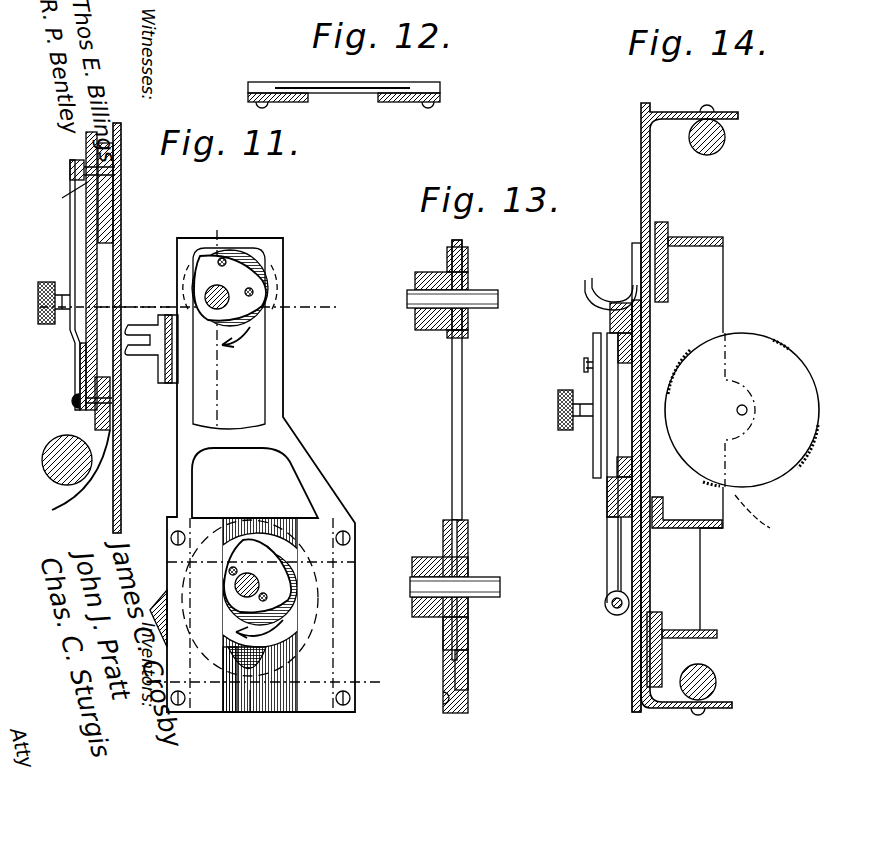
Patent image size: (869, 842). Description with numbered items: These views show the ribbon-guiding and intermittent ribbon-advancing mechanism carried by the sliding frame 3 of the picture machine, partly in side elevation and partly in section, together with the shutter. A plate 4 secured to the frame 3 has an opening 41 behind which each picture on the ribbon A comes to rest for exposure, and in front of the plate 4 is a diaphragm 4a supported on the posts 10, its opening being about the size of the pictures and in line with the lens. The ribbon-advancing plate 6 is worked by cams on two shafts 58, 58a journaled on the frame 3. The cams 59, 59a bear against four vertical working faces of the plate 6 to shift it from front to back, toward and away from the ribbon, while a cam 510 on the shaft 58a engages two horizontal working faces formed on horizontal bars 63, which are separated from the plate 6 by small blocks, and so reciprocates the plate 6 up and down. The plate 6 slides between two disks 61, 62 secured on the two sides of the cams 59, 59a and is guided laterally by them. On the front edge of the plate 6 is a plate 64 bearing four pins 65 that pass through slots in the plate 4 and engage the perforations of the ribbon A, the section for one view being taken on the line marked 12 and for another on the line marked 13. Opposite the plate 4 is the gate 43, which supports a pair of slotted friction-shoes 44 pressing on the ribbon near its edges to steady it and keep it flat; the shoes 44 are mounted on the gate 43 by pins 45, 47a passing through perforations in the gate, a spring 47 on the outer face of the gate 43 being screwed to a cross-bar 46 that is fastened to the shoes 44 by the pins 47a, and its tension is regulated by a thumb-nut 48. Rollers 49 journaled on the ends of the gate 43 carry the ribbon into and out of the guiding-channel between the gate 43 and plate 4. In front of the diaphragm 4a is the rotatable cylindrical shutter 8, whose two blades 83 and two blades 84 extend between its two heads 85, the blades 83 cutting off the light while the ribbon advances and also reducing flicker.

In FIG. 14, the sliding frame 3 is at (725, 240).
In FIG. 11, the plate 4 is at (121, 487).
In FIG. 14, the plate 4 is at (636, 712).
In FIG. 14, the diaphragm 4a is at (652, 187).
In FIG. 11, the ribbon-advancing plate 6 is at (272, 404).
In FIG. 12, the ribbon-advancing plate 6 is at (400, 103).
In FIG. 13, the ribbon-advancing plate 6 is at (462, 240).
In FIG. 14, the rotatable shutter 8 is at (760, 410).
In FIG. 14, the posts 10 is at (730, 137).
In FIG. 11, the bracket 12 is at (272, 676).
In FIG. 11, the arm 13 is at (250, 712).
In FIG. 11, the opening 41 is at (130, 240).
In FIG. 14, the opening 41 is at (672, 360).
In FIG. 11, the gate 43 is at (85, 377).
In FIG. 14, the gate 43 is at (607, 500).
In FIG. 11, the friction-shoes 44 is at (123, 145).
In FIG. 14, the friction-shoes 44 is at (600, 345).
In FIG. 11, the pin 45 is at (73, 403).
In FIG. 14, the pin 45 is at (864, 530).
In FIG. 11, the cross-bar 46 is at (105, 172).
In FIG. 14, the cross-bar 46 is at (586, 370).
In FIG. 11, the spring 47 is at (70, 262).
In FIG. 11, the pins 47a is at (53, 199).
In FIG. 11, the thumb-nut 48 is at (47, 328).
In FIG. 14, the thumb-nut 48 is at (566, 410).
In FIG. 11, the rollers 49 is at (46, 447).
In FIG. 11, the shaft 58 is at (222, 297).
In FIG. 13, the shaft 58 is at (498, 299).
In FIG. 11, the shaft 58a is at (252, 585).
In FIG. 13, the shaft 58a is at (477, 586).
In FIG. 11, the cam 59 is at (235, 270).
In FIG. 13, the cam 59 is at (470, 277).
In FIG. 11, the cam 59a is at (262, 550).
In FIG. 13, the cam 59a is at (443, 560).
In FIG. 11, the disk 61 is at (262, 320).
In FIG. 13, the disk 61 is at (468, 333).
In FIG. 11, the disk 62 is at (283, 632).
In FIG. 13, the disk 62 is at (443, 640).
In FIG. 11, the horizontal bars 63 is at (292, 518).
In FIG. 12, the horizontal bars 63 is at (440, 86).
In FIG. 13, the horizontal bars 63 is at (470, 537).
In FIG. 11, the plate 64 is at (165, 315).
In FIG. 11, the pins 65 is at (162, 383).
In FIG. 14, the blades 83 is at (676, 388).
In FIG. 14, the blades 84 is at (795, 335).
In FIG. 14, the heads 85 is at (805, 358).
In FIG. 11, the cam 510 is at (230, 690).
In FIG. 13, the cam 510 is at (470, 668).
In FIG. 11, the ribbon A is at (72, 510).
In FIG. 14, the ribbon A is at (757, 520).